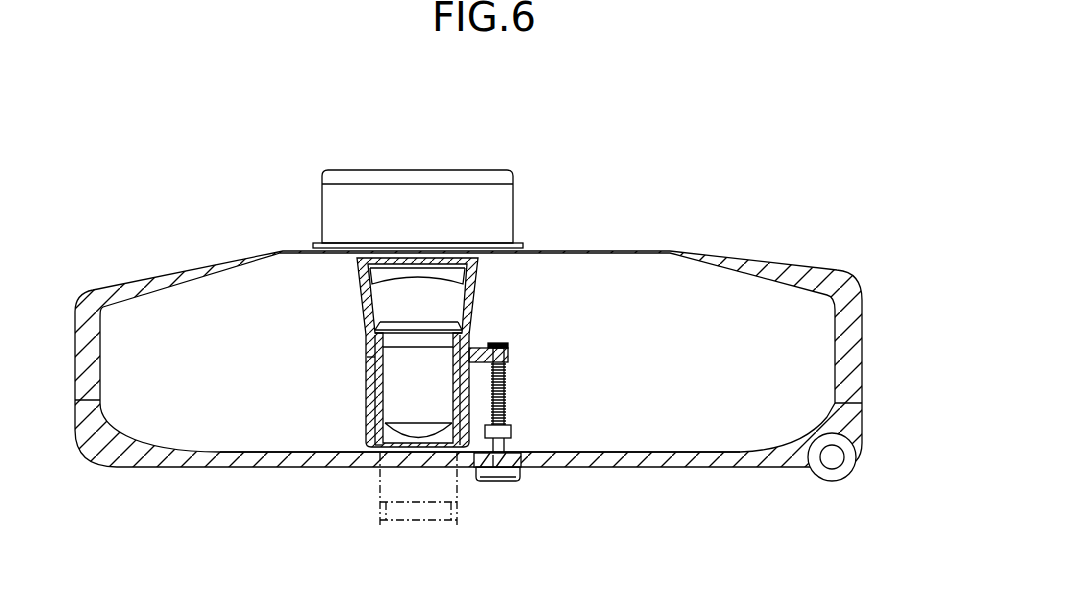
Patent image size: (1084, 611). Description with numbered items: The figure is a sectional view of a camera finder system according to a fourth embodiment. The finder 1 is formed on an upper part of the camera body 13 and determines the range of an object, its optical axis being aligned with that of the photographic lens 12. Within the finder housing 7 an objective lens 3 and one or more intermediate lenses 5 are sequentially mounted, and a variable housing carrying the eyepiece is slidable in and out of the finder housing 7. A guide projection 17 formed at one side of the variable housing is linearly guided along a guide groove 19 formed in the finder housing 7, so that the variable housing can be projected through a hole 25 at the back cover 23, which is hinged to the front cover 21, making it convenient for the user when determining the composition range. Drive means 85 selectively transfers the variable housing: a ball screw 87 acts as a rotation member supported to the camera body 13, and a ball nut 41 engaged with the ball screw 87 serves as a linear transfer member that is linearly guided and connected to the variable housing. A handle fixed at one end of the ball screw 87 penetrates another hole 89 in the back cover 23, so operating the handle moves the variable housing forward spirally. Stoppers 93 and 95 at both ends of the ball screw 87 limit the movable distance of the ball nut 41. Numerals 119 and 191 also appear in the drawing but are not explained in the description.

The finder 1 is at (350, 392).
The objective lens 3 is at (397, 268).
The intermediate lens 5 is at (447, 328).
The finder housing 7 is at (363, 307).
The photographic lens 12 is at (346, 195).
The camera body 13 is at (745, 188).
The guide projection 17 is at (367, 357).
The guide groove 19 is at (363, 402).
The front cover 21 is at (853, 342).
The back cover 23 is at (667, 463).
The hole 25 is at (417, 463).
The ball nut 41 is at (480, 345).
The drive means 85 is at (514, 413).
The ball screw 87 is at (506, 375).
The hole 89 is at (508, 474).
The stopper 93 is at (498, 342).
The stopper 95 is at (537, 466).
The holder bottom 119 is at (383, 452).
The holder foot 191 is at (493, 472).